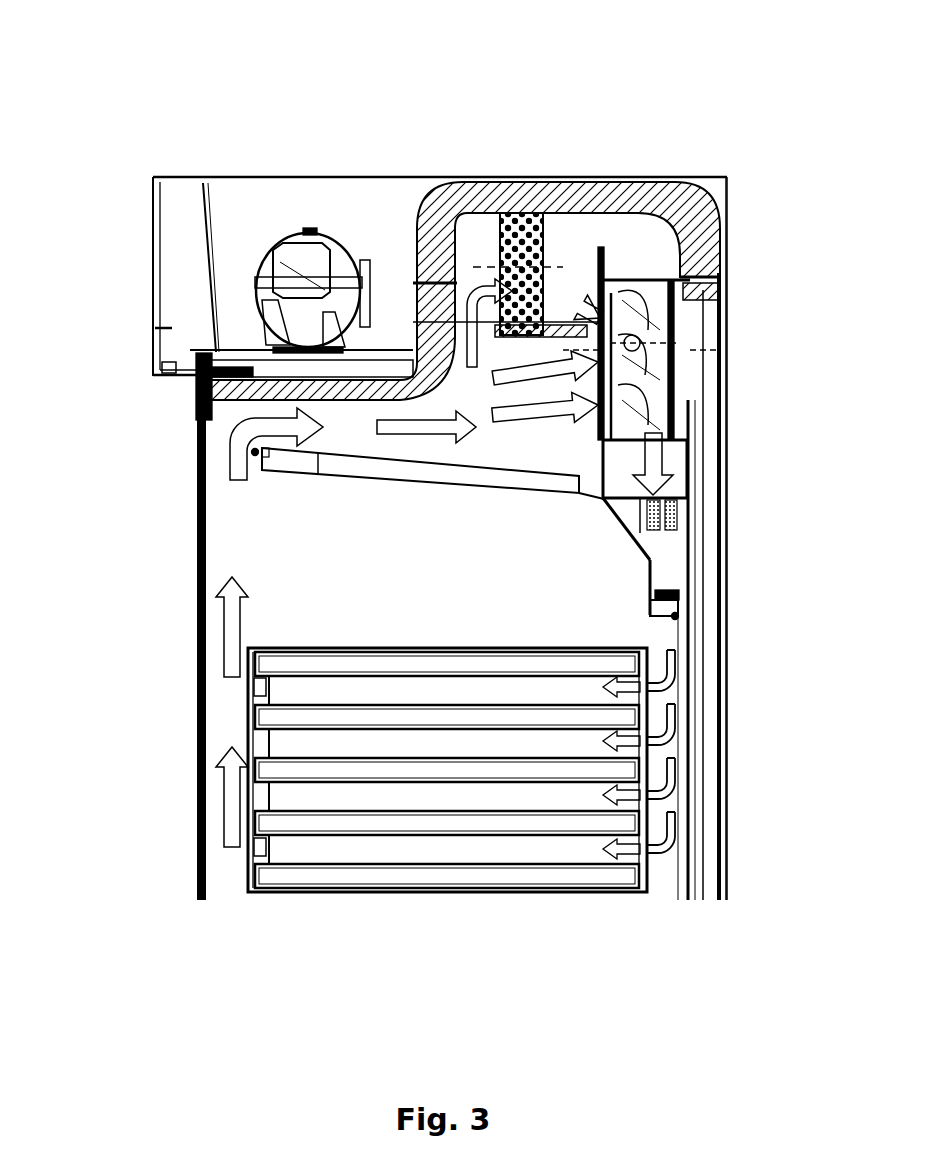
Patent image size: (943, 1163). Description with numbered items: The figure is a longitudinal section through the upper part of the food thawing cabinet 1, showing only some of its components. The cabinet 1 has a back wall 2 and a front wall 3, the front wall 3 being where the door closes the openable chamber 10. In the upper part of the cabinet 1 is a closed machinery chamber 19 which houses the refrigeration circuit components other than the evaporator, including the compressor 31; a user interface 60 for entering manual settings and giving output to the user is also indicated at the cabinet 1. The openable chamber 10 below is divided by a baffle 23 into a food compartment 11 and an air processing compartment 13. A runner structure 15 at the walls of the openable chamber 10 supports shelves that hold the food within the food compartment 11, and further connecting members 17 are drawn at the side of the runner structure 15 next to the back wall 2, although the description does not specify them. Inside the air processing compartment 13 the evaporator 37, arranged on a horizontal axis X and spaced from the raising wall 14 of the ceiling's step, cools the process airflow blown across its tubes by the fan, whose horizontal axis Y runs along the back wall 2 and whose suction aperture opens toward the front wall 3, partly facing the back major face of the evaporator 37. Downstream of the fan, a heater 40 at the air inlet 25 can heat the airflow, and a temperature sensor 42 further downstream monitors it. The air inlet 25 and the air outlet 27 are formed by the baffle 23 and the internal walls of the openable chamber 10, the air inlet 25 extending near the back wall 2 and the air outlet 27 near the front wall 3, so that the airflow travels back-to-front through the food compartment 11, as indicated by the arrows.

The food thawing cabinet 1 is at (355, 124).
The back wall 2 is at (727, 817).
The front wall 3 is at (195, 697).
The openable chamber 10 is at (185, 822).
The food compartment 11 is at (367, 580).
The air processing compartment 13 is at (525, 440).
The raising wall 14 is at (453, 243).
The runner structure 15 is at (428, 830).
The heat exchanger connection tubes 17 is at (680, 740).
The machinery chamber 19 is at (262, 178).
The baffle 23 is at (400, 483).
The air inlet 25 is at (678, 617).
The air outlet 27 is at (255, 452).
The compressor 31 is at (340, 262).
The evaporator 37 is at (552, 252).
The heater 40 is at (643, 530).
The temperature sensor 42 is at (667, 537).
The user interface 60 is at (157, 328).
The horizontal axis of the evaporator X is at (563, 262).
The horizontal axis of the fan Y is at (703, 347).